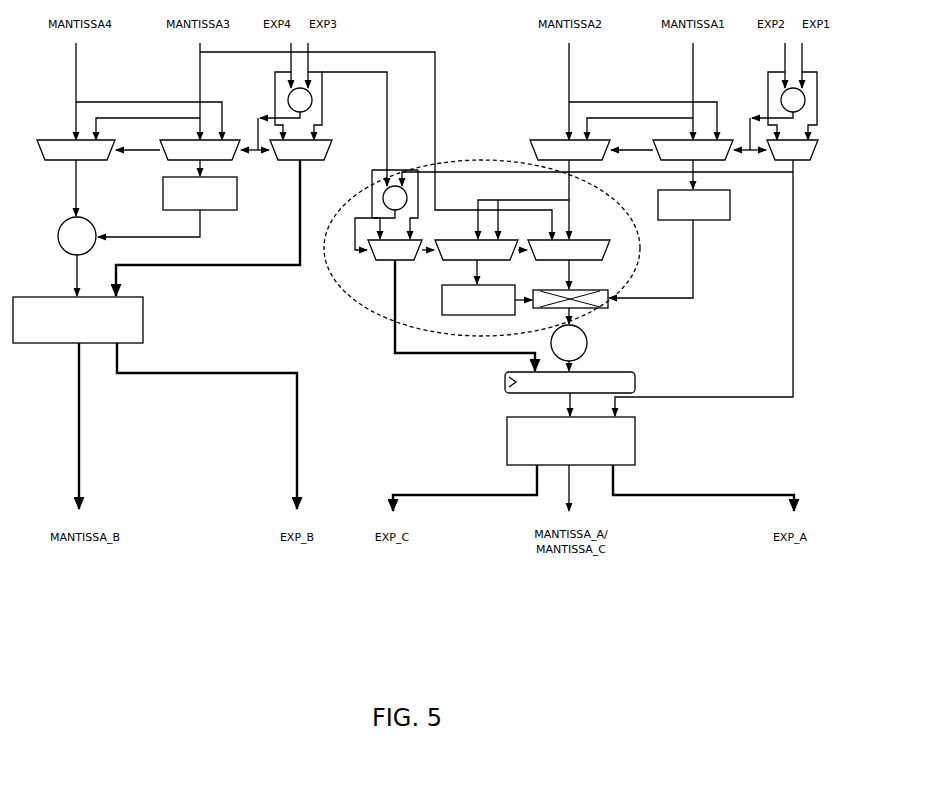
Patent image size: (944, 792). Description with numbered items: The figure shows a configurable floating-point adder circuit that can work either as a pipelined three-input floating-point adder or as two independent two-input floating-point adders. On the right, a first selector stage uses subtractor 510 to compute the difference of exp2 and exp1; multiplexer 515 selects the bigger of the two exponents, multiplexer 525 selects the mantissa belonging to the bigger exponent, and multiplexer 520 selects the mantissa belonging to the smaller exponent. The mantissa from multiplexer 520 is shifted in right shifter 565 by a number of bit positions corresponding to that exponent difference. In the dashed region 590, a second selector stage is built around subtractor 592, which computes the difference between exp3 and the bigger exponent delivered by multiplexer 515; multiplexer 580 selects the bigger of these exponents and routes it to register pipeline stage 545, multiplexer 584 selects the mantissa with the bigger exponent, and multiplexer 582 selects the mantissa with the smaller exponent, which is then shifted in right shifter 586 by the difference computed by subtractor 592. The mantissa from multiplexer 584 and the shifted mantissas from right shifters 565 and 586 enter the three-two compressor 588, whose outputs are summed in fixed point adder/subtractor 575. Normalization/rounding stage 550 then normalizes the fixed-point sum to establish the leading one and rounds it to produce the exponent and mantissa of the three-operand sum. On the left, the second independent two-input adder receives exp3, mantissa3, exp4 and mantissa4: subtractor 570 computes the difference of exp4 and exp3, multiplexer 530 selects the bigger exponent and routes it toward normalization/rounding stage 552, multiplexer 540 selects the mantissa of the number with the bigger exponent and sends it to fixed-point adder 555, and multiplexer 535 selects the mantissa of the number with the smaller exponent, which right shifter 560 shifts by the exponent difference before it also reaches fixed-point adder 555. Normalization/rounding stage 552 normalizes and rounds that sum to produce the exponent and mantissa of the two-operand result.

The subtractor 510 is at (806, 100).
The multiplexer 515 is at (610, 278).
The multiplexer 520 is at (672, 164).
The multiplexer 525 is at (544, 189).
The multiplexer 530 is at (224, 218).
The multiplexer 535 is at (178, 158).
The multiplexer 540 is at (76, 178).
The register pipeline stage 545 is at (570, 394).
The normalization/rounding stage 550 is at (593, 464).
The normalization/rounding stage 552 is at (155, 403).
The fixed-point adder 555 is at (58, 233).
The right shifter 560 is at (163, 193).
The right shifter 565 is at (732, 206).
The subtractor 570 is at (288, 100).
The fixed point adder/subtractor 575 is at (588, 343).
The multiplexer 580 is at (451, 305).
The multiplexer 582 is at (481, 262).
The multiplexer 584 is at (569, 264).
The right shifter 586 is at (462, 285).
The 3-2 compressor 588 is at (556, 290).
The three-operand alignment block 590 is at (364, 201).
The subtractor 592 is at (394, 185).